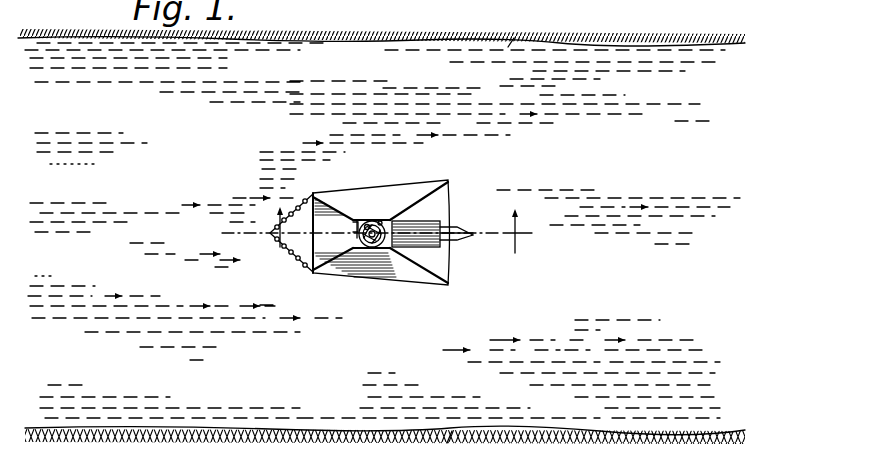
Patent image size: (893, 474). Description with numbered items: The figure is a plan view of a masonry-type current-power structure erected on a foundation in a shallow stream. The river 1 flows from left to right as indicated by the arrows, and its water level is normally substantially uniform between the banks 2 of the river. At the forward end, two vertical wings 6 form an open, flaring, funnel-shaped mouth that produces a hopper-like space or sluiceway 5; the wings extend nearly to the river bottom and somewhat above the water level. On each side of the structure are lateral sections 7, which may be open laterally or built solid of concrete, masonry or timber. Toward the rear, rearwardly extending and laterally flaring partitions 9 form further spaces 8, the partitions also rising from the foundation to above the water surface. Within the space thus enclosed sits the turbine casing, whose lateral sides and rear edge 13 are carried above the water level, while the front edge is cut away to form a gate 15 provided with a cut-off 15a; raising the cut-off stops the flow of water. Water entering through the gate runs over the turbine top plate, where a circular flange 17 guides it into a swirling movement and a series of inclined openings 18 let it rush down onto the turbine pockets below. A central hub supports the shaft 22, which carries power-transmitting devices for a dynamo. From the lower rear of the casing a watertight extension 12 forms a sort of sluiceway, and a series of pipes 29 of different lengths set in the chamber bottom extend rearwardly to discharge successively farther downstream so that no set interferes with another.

The river 1 is at (381, 236).
The banks of the river 2 is at (375, 245).
The hopper-like space or sluiceway 5 is at (306, 253).
The vertical wings 6 is at (337, 266).
The lateral sections 7 is at (401, 292).
The rear spaces 8 is at (436, 261).
The partitions 9 is at (442, 273).
The watertight extension 12 is at (457, 227).
The rear edge of the casing 13 is at (375, 254).
The gate 15 is at (352, 221).
The cut-off 15a is at (352, 240).
The circular flange 17 is at (385, 228).
The inclined openings 18 is at (367, 224).
The shaft 22 is at (381, 222).
The pipes 29 is at (460, 239).